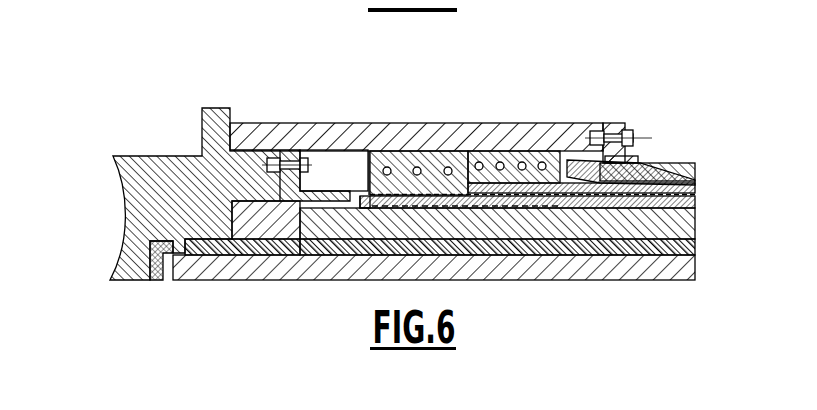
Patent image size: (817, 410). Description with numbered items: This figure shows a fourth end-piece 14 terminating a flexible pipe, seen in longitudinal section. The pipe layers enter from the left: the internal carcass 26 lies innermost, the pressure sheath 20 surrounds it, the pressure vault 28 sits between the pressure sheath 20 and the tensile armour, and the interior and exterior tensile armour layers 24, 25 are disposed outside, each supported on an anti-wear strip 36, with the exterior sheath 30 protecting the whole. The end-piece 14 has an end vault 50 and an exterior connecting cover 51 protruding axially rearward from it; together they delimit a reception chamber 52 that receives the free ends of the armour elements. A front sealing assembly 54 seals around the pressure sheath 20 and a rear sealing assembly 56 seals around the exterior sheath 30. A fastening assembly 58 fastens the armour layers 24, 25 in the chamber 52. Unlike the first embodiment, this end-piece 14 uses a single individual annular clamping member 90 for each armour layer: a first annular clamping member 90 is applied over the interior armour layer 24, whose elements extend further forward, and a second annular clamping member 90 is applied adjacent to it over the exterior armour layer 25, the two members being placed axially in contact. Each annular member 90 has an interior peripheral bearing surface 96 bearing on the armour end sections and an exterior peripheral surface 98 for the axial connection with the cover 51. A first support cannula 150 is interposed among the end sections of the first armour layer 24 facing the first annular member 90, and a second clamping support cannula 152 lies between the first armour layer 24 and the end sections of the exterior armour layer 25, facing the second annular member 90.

The end-piece 14 is at (519, 78).
The pressure sheath 20 is at (689, 240).
The interior tensile armour layer 24 is at (689, 191).
The exterior tensile armour layer 25 is at (689, 178).
The internal carcass 26 is at (675, 263).
The pressure vault 28 is at (524, 273).
The exterior sheath 30 is at (689, 158).
The anti-wear strip 36 is at (689, 210).
The end vault 50 is at (129, 195).
The exterior connecting cover 51 is at (404, 123).
The reception chamber 52 is at (328, 157).
The front sealing assembly 54 is at (245, 241).
The rear sealing assembly 56 is at (629, 113).
The fastening assembly 58 is at (416, 102).
The annular clamping member 90 is at (420, 143).
The interior peripheral bearing surface 96 is at (404, 186).
The exterior peripheral surface 98 is at (367, 187).
The first support cannula 150 is at (368, 191).
The second clamping support cannula 152 is at (525, 188).